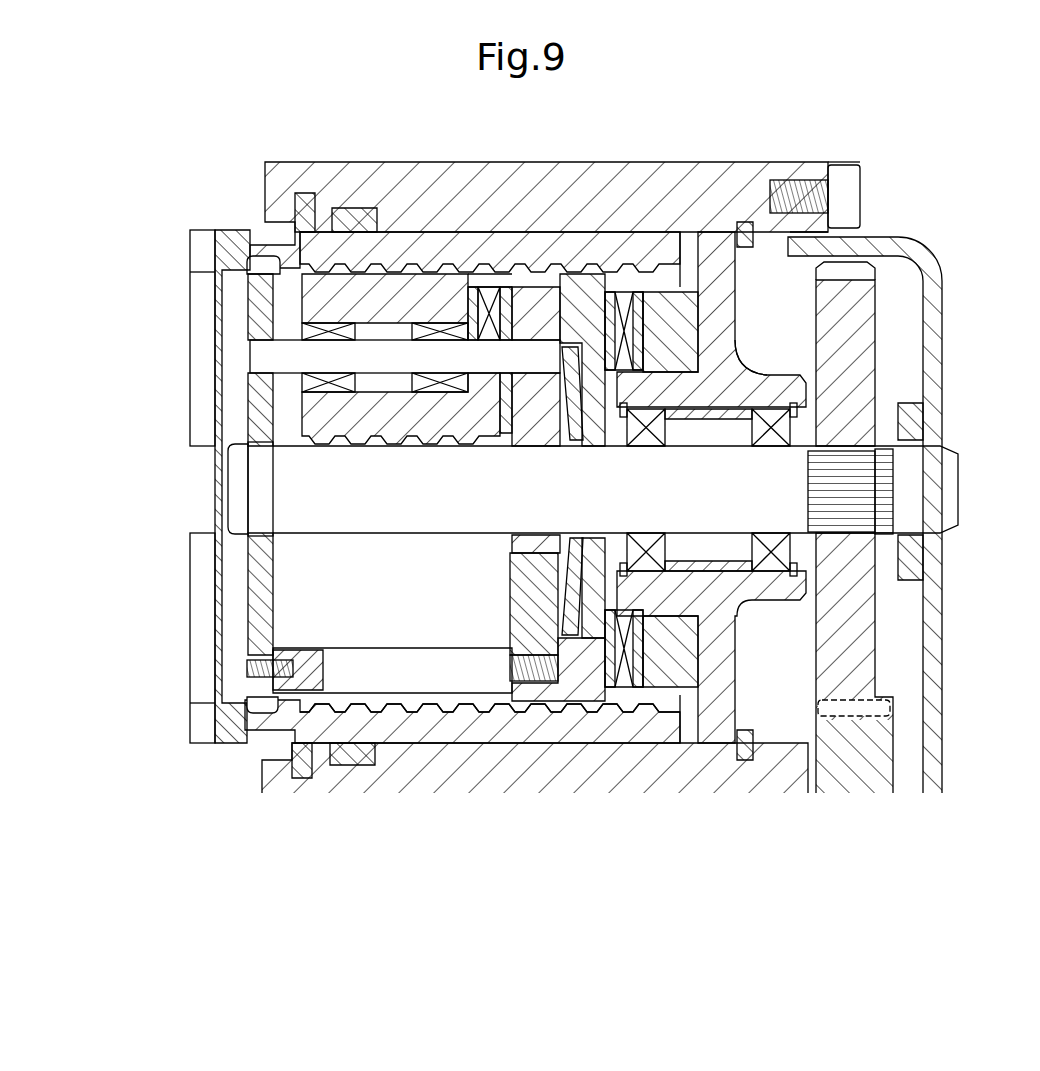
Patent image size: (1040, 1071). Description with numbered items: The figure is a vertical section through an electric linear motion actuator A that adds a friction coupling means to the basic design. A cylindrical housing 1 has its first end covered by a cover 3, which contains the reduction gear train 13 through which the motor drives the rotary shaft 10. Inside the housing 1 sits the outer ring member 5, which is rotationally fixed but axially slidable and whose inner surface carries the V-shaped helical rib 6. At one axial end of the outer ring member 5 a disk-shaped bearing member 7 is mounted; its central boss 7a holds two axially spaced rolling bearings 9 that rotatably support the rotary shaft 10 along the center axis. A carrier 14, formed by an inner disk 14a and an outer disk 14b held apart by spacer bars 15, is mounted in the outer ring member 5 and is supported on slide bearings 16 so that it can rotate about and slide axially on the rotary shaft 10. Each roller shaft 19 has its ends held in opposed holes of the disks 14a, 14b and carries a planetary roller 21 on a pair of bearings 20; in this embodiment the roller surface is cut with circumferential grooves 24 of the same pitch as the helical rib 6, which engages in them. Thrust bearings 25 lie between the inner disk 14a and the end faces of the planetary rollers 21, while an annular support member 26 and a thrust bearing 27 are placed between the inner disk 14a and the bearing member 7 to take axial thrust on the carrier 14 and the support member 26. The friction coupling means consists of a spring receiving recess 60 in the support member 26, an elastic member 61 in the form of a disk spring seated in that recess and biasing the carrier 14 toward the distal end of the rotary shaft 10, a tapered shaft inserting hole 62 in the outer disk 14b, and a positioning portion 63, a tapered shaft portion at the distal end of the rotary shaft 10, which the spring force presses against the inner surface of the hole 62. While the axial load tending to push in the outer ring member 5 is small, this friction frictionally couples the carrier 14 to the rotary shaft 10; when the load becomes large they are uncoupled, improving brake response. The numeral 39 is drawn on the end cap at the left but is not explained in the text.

The electric linear motion actuator A is at (262, 152).
The cylindrical housing 1 is at (322, 154).
The cover 3 is at (935, 326).
The outer ring member 5 is at (562, 272).
The helical rib 6 is at (620, 300).
The bearing member 7 is at (716, 300).
The boss 7a is at (703, 378).
The rolling bearings 9 is at (742, 444).
The rotary shaft 10 is at (315, 518).
The reduction gear train 13 is at (877, 652).
The carrier 14 is at (467, 698).
The inner disk 14a is at (548, 702).
The outer disk 14b is at (225, 600).
The spacer bars 15 is at (422, 680).
The slide bearings 16 is at (510, 565).
The roller shaft 19 is at (390, 367).
The bearings 20 is at (442, 382).
The planetary roller 21 is at (383, 290).
The circumferential grooves 24 is at (432, 270).
The thrust bearings 25 is at (490, 300).
The annular support member 26 is at (590, 300).
The thrust bearing 27 is at (663, 300).
The end cap 39 is at (215, 322).
The spring receiving recess 60 is at (570, 442).
The elastic member 61 is at (530, 447).
The tapered shaft inserting hole 62 is at (257, 452).
The positioning portion 63 is at (258, 493).